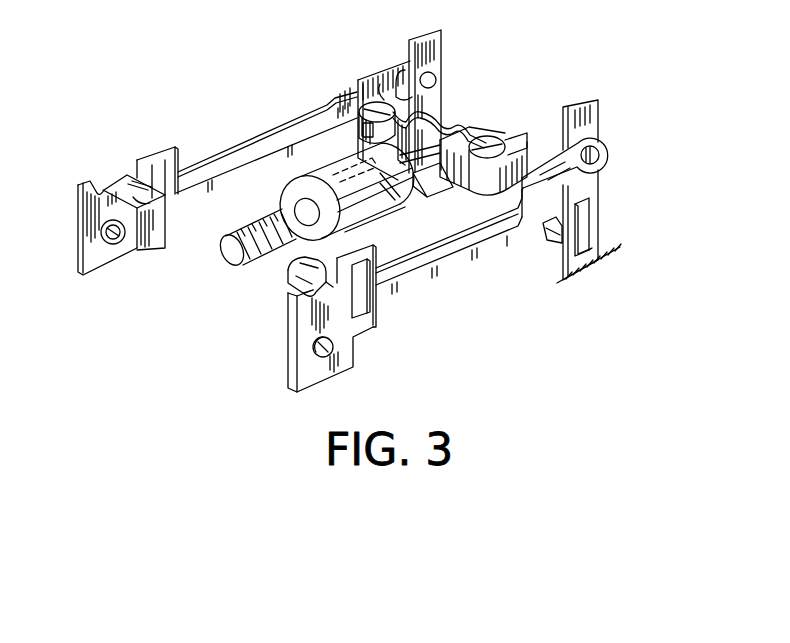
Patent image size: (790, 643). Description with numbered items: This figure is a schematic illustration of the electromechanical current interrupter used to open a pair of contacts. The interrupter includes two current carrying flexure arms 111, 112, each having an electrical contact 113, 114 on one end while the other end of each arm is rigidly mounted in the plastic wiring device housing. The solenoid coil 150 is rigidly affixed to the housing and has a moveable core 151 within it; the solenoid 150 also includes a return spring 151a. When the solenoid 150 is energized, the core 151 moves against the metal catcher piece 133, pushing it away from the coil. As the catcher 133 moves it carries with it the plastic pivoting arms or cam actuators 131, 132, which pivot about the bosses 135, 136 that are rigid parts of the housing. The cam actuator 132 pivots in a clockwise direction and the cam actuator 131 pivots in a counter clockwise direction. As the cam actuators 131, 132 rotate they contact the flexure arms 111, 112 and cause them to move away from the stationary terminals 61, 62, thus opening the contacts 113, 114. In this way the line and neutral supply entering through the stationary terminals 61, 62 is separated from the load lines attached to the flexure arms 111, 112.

The stationary terminal 61 is at (602, 194).
The stationary terminal 62 is at (436, 100).
The current carrying flexure arm 111 is at (278, 123).
The current carrying flexure arm 112 is at (467, 246).
The electrical contact 113 is at (416, 59).
The electrical contact 114 is at (604, 125).
The cam actuator 131 is at (355, 134).
The cam actuator 132 is at (511, 132).
The metal catcher piece 133 is at (452, 114).
The boss 135 is at (509, 135).
The boss 136 is at (375, 104).
The solenoid coil 150 is at (369, 219).
The moveable core 151 is at (234, 235).
The return spring 151a is at (252, 228).